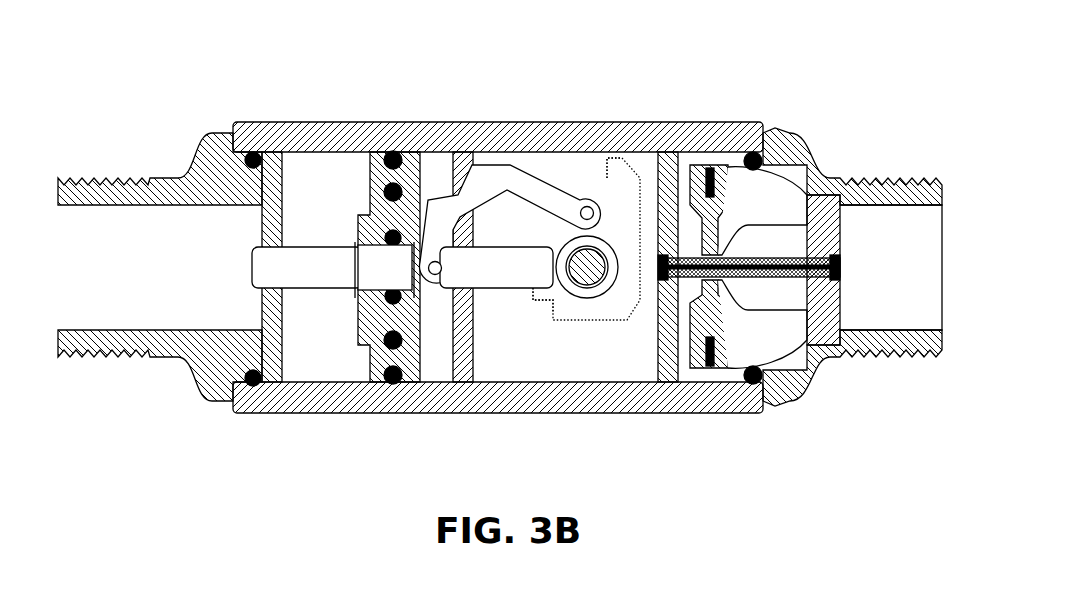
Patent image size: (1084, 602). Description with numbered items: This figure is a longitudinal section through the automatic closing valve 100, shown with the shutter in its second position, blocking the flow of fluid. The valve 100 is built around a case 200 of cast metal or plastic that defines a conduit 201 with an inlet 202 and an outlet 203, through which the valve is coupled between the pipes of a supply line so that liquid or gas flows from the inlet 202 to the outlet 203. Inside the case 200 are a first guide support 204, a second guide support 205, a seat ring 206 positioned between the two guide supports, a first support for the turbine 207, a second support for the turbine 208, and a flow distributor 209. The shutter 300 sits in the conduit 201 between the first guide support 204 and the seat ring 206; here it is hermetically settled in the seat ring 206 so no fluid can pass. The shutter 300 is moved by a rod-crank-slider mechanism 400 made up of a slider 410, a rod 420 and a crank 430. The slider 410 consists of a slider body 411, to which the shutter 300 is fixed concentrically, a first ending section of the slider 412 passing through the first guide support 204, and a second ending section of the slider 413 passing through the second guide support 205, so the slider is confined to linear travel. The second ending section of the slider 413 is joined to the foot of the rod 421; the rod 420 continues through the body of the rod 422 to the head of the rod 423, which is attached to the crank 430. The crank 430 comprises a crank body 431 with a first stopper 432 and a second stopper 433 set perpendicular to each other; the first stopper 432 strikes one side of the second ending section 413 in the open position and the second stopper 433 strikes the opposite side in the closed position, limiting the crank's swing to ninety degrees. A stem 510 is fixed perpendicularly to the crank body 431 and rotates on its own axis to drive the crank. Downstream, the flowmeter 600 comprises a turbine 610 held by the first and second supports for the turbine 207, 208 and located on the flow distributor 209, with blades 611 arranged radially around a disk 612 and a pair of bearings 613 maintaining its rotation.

The valve 100 is at (330, 90).
The case 200 is at (405, 122).
The conduit 201 is at (540, 383).
The inlet 202 is at (900, 279).
The outlet 203 is at (145, 270).
The first guide support 204 is at (273, 385).
The second guide support 205 is at (463, 385).
The seat ring 206 is at (395, 384).
The first support for the turbine 207 is at (668, 383).
The second support for the turbine 208 is at (843, 309).
The flow distributor 209 is at (745, 384).
The shutter 300 is at (361, 314).
The rod-crank-slider mechanism 400 is at (300, 243).
The slider 410 is at (386, 183).
The slider body 411 is at (398, 277).
The first ending section of the slider 412 is at (312, 279).
The second ending section of the slider 413 is at (536, 279).
The rod 420 is at (510, 173).
The foot of the rod 421 is at (434, 275).
The body of the rod 422 is at (533, 165).
The head of the rod 423 is at (588, 205).
The crank 430 is at (580, 208).
The crank body 431 is at (550, 287).
The first stopper 432 is at (613, 162).
The second stopper 433 is at (540, 300).
The stem 510 is at (585, 277).
The flowmeter 600 is at (785, 245).
The turbine 610 is at (722, 205).
The blades 611 is at (788, 345).
The disk 612 is at (718, 252).
The bearings 613 is at (840, 258).